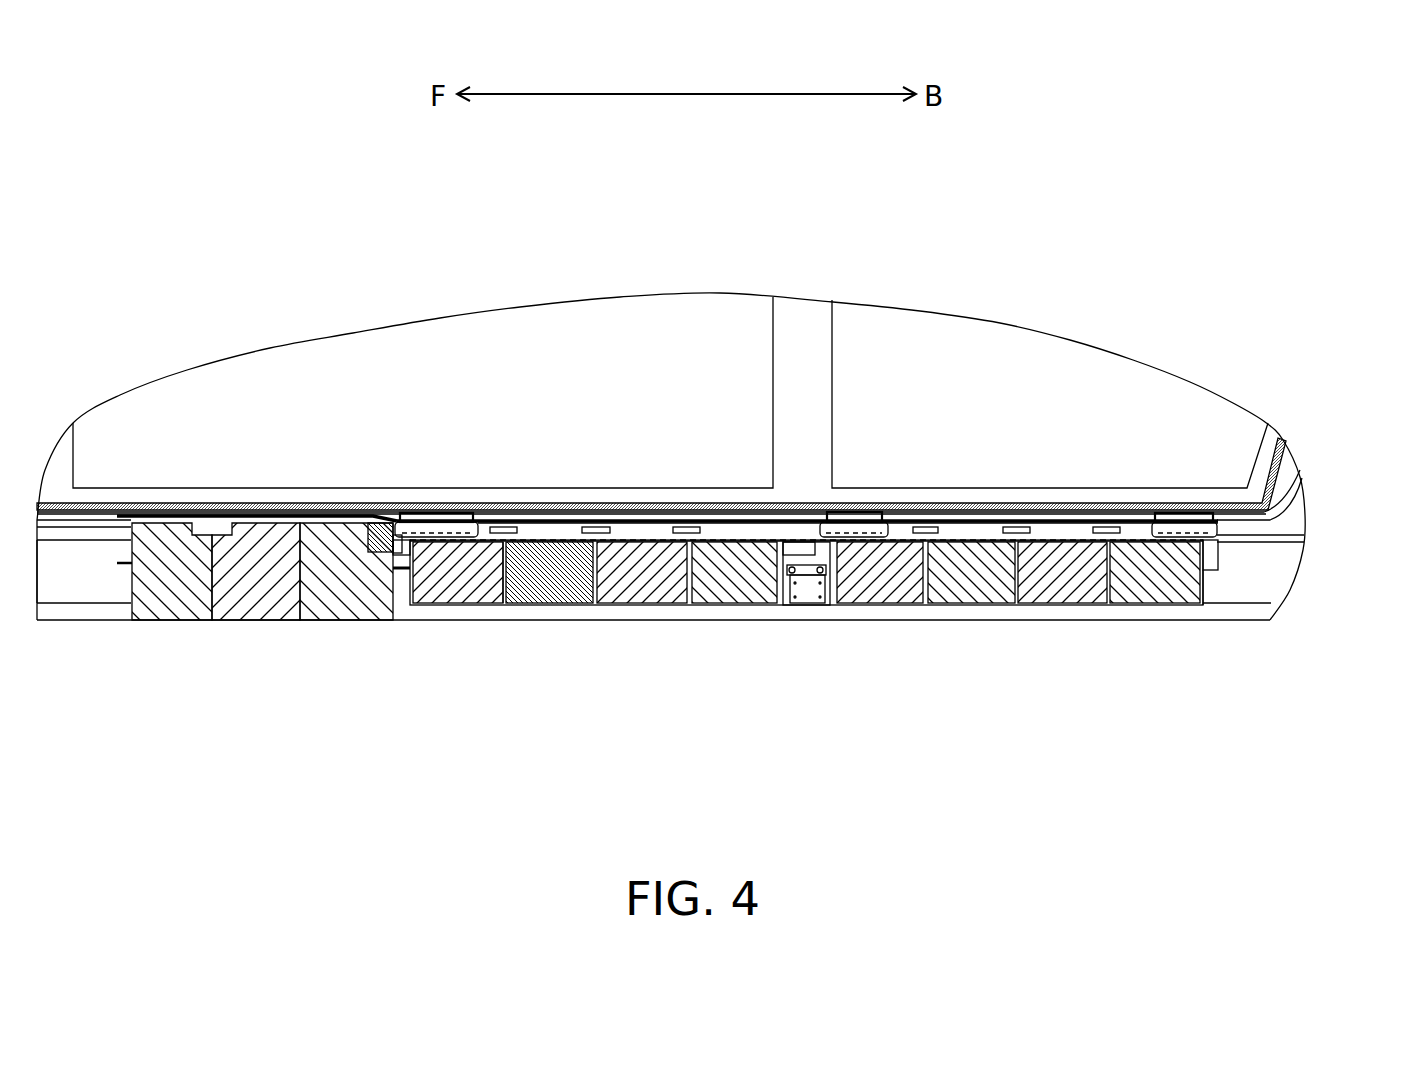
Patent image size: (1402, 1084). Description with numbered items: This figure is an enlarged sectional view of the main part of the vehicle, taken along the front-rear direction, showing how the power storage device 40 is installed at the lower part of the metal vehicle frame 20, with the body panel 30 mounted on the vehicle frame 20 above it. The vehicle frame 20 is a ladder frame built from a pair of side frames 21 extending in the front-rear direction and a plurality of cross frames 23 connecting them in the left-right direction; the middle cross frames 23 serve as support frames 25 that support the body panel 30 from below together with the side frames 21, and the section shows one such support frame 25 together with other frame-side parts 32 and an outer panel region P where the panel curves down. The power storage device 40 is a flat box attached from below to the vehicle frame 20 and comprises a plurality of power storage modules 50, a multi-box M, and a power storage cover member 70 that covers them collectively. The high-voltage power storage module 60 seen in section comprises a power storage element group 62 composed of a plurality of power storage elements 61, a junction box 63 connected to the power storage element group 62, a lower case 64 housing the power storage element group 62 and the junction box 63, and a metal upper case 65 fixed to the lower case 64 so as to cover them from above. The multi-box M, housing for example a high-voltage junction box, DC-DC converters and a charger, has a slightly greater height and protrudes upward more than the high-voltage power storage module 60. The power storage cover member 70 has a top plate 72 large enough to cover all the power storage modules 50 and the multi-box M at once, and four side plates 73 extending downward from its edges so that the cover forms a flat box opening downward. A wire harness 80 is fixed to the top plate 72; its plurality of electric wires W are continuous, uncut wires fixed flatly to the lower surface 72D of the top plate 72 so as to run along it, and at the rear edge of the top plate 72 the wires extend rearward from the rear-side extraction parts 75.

The vehicle frame 20 is at (57, 542).
The side frame 21 is at (65, 630).
The cross frame 23 is at (482, 518).
The support frame 25 is at (480, 394).
The body panel 30 is at (963, 507).
The frame bracket 32 is at (1090, 389).
The power storage device 40 is at (745, 648).
The power storage module 50 is at (806, 652).
The high-voltage power storage module 60 is at (806, 652).
The power storage element 61 is at (806, 652).
The power storage element group 62 is at (1145, 580).
The junction box 63 is at (807, 585).
The lower case 64 is at (1203, 593).
The upper case 65 is at (1208, 553).
The power storage cover member 70 is at (750, 504).
The top plate 72 is at (780, 527).
The lower surface 72D is at (653, 523).
The side plate 73 is at (129, 518).
The rear-side extraction part 75 is at (1216, 530).
The wire harness 80 is at (537, 523).
The electric wire W is at (806, 615).
The multi-box M is at (254, 650).
The outer panel P is at (1297, 490).